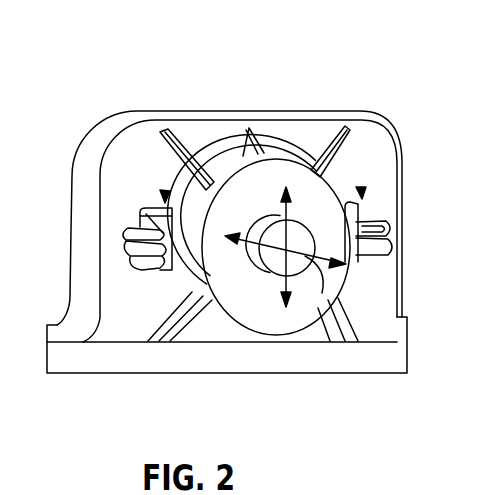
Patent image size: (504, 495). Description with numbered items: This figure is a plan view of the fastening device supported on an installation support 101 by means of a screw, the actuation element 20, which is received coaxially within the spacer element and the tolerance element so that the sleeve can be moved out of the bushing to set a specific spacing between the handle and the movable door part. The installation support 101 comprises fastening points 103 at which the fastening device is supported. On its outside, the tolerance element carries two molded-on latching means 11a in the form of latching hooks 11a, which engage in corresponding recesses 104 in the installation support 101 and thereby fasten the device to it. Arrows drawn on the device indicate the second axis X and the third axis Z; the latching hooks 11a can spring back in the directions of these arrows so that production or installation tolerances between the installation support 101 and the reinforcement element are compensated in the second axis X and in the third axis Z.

The fastening points 103 is at (230, 137).
The installation support 101 is at (367, 350).
The actuation element 20 is at (262, 307).
The third axis Z is at (289, 233).
The second axis X is at (322, 293).
The latching means 11a is at (141, 226).
The recesses 104 is at (165, 196).